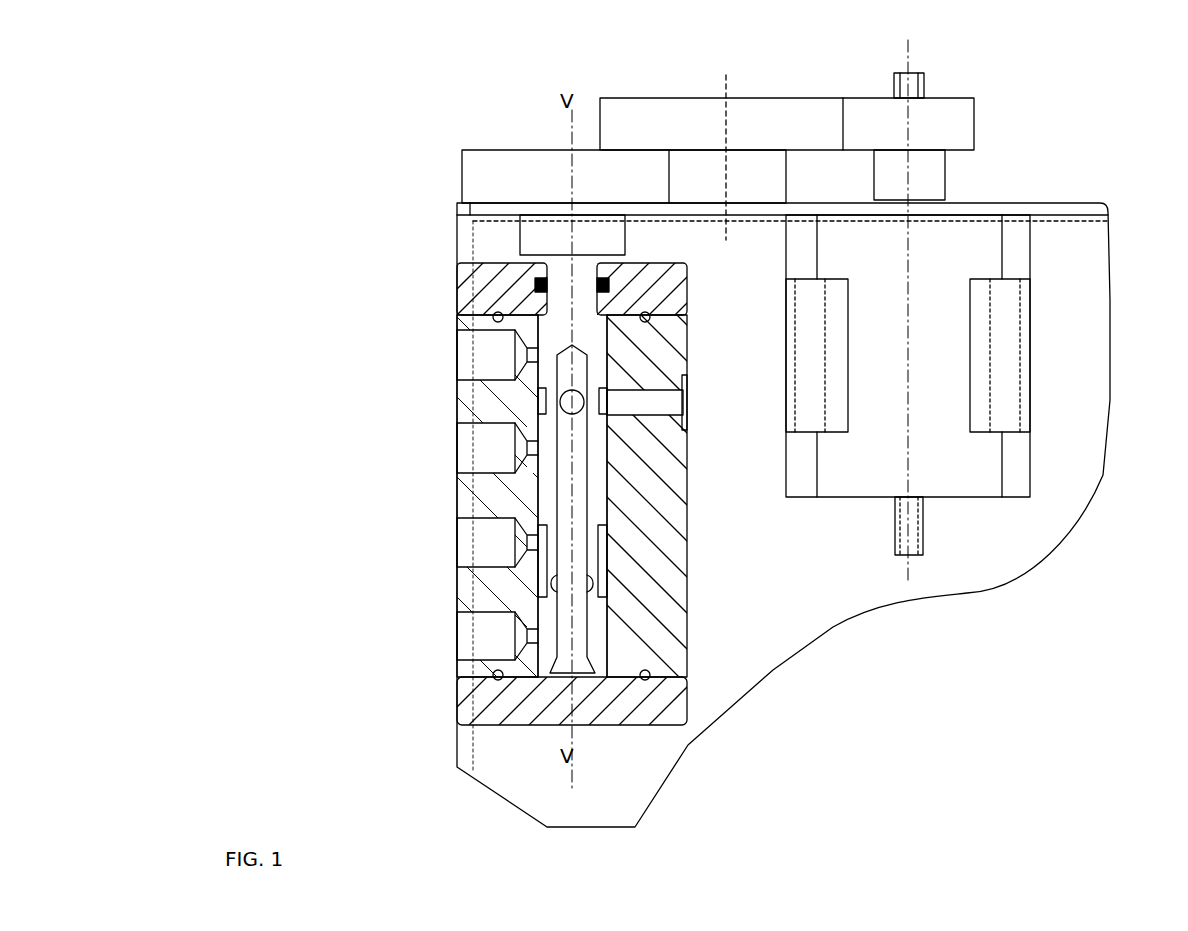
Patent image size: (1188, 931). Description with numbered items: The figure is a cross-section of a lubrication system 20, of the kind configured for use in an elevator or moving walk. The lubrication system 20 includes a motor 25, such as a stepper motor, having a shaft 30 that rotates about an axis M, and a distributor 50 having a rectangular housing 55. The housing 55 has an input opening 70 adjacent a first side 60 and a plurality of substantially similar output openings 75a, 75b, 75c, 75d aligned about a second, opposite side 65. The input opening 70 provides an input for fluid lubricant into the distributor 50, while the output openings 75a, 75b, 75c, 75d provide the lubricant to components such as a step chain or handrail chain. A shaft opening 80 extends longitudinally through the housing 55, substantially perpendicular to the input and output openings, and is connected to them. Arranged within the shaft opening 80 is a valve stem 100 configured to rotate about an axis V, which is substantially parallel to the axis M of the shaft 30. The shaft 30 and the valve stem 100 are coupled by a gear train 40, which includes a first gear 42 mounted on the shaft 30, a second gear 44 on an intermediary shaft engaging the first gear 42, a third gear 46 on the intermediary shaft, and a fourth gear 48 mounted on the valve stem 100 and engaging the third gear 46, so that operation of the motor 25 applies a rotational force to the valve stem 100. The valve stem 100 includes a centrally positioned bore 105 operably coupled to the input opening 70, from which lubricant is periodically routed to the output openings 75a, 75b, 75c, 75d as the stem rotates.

The lubrication system 20 is at (296, 142).
The motor 25 is at (965, 447).
The shaft 30 is at (925, 95).
The gear train 40 is at (716, 130).
The first gear 42 is at (940, 120).
The second gear 44 is at (767, 130).
The third gear 46 is at (697, 165).
The fourth gear 48 is at (483, 168).
The distributor 50 is at (722, 605).
The housing 55 is at (478, 703).
The first side 60 is at (607, 563).
The second side 65 is at (462, 489).
The input opening 70 is at (667, 405).
The output opening 75a is at (484, 357).
The output opening 75b is at (477, 447).
The output opening 75c is at (483, 542).
The output opening 75d is at (483, 636).
The shaft opening 80 is at (535, 296).
The valve stem 100 is at (598, 483).
The bore 105 is at (578, 517).